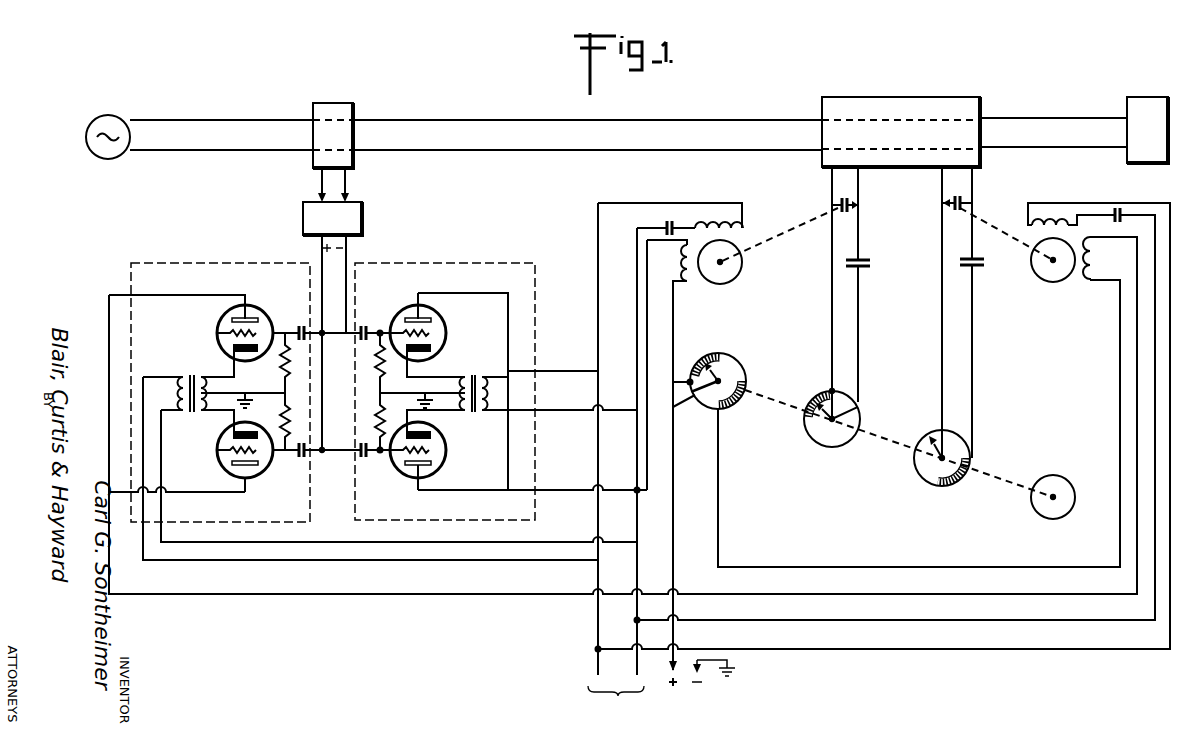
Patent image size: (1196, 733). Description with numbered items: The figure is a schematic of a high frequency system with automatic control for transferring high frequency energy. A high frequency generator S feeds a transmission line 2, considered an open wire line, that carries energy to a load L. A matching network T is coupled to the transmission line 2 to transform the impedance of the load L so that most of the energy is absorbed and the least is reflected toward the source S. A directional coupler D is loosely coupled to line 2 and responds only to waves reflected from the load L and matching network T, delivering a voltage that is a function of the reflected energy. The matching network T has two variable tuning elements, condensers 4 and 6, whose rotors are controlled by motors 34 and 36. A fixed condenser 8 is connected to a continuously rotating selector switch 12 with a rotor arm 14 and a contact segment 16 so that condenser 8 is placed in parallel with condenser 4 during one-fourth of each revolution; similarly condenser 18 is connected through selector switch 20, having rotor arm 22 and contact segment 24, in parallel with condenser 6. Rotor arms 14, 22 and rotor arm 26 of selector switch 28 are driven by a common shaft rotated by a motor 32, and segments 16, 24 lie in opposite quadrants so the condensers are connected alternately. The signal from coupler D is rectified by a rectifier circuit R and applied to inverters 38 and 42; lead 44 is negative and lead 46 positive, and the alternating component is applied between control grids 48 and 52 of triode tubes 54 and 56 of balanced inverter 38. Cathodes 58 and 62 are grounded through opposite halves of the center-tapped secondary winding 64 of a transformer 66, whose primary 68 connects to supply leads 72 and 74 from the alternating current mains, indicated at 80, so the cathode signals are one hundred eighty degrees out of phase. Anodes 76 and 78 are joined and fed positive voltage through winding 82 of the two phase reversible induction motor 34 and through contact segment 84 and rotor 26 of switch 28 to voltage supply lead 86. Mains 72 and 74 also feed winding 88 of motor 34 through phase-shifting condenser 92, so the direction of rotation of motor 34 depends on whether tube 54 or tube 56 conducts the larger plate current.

The high frequency generator S is at (84, 140).
The transmission line 2 is at (176, 148).
The directional coupler D is at (343, 99).
The rectifier circuit R is at (369, 206).
The matching network T is at (910, 90).
The load L is at (1156, 94).
The variable condenser 4 is at (832, 200).
The variable condenser 6 is at (956, 198).
The fixed condenser 8 is at (872, 262).
The condenser 18 is at (985, 265).
The selector switch 12 is at (808, 440).
The rotor arm 14 is at (836, 401).
The contact segment 16 is at (816, 403).
The selector switch 20 is at (920, 485).
The rotor arm 22 is at (932, 442).
The contact segment 24 is at (962, 480).
The rotor arm 26 is at (728, 369).
The selector switch 28 is at (706, 405).
The contact segment 84 is at (712, 356).
The motor 32 is at (1058, 474).
The motor 34 is at (744, 259).
The motor 36 is at (1054, 283).
The balanced inverter 38 is at (462, 262).
The inverter 42 is at (210, 262).
The lead 44 is at (350, 246).
The lead 46 is at (318, 248).
The control grid 48 is at (404, 330).
The control grid 52 is at (404, 453).
The triode tube 54 is at (441, 318).
The triode tube 56 is at (443, 458).
The cathode 58 is at (428, 349).
The cathode 62 is at (430, 440).
The center-tapped secondary winding 64 is at (467, 374).
The transformer 66 is at (474, 414).
The primary 68 is at (484, 376).
The supply lead 72 is at (593, 660).
The supply lead 74 is at (633, 662).
The anode 76 is at (412, 314).
The anode 78 is at (414, 468).
The alternating current supply terminals 80 is at (616, 701).
The winding 82 is at (688, 282).
The voltage supply lead 86 is at (676, 641).
The winding 88 is at (746, 225).
The phase-shifting condenser 92 is at (670, 210).